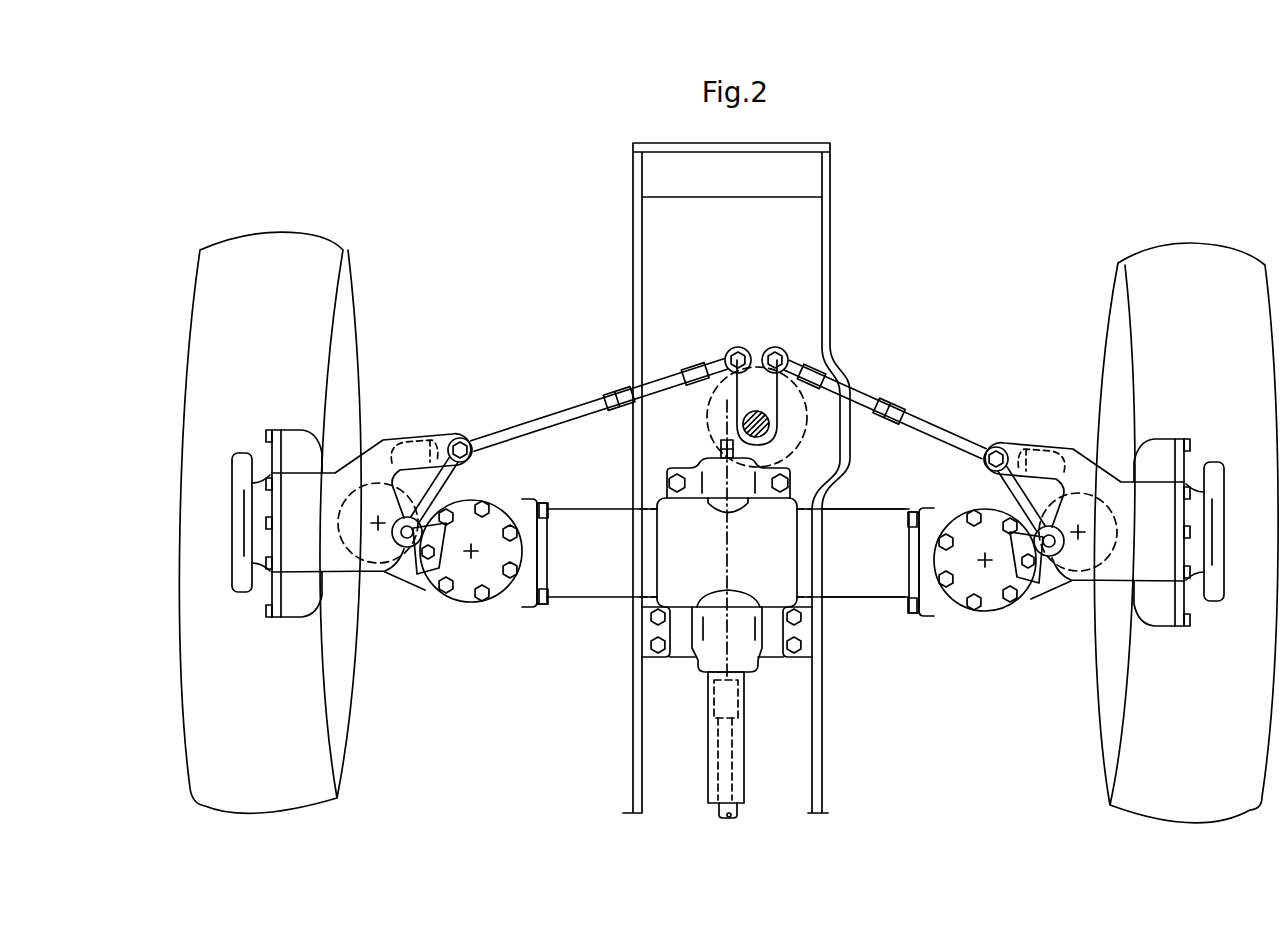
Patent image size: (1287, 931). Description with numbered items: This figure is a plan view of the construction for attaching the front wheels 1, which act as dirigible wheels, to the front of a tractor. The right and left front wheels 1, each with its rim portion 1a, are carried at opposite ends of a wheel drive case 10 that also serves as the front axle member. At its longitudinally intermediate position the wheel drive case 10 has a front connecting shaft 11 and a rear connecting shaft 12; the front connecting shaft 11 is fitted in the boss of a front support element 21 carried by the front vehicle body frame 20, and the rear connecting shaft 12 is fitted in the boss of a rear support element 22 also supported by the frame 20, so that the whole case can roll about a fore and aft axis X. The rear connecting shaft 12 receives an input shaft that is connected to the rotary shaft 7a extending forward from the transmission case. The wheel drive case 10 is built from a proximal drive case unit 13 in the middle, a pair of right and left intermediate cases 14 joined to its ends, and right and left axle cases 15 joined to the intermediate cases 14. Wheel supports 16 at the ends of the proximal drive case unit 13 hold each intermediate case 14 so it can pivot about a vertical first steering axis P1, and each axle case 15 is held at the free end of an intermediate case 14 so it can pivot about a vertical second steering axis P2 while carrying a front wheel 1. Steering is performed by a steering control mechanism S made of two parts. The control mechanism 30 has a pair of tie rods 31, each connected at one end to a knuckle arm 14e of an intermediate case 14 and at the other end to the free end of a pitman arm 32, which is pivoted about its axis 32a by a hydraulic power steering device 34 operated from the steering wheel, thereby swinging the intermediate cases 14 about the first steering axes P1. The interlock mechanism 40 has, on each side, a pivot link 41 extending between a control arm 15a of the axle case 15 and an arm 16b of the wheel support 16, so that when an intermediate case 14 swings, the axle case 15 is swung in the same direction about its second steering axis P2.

The front wheel 1 is at (312, 240).
The wheel rim 1a is at (232, 496).
The rotary shaft 7a is at (734, 808).
The wheel drive case 10 is at (887, 615).
The front connecting shaft 11 is at (720, 508).
The rear connecting shaft 12 is at (740, 598).
The proximal drive case unit 13 is at (845, 590).
The intermediate case 14 is at (400, 580).
The knuckle arm 14e is at (400, 444).
The axle case 15 is at (298, 618).
The control arm 15a is at (427, 435).
The wheel support 16 is at (497, 592).
The arm 16b is at (414, 572).
The front vehicle body frame 20 is at (633, 212).
The front support element 21 is at (690, 472).
The rear support element 22 is at (770, 648).
The control mechanism 30 is at (890, 300).
The tie rod 31 is at (593, 388).
The pitman arm 32 is at (751, 349).
The axis 32a is at (742, 425).
The hydraulic power steering device 34 is at (812, 426).
The interlock mechanism 40 is at (728, 494).
The pivot link 41 is at (454, 481).
The first steering axis P1 is at (471, 556).
The second steering axis P2 is at (377, 523).
The steering control mechanism S is at (972, 398).
The axis X is at (720, 648).